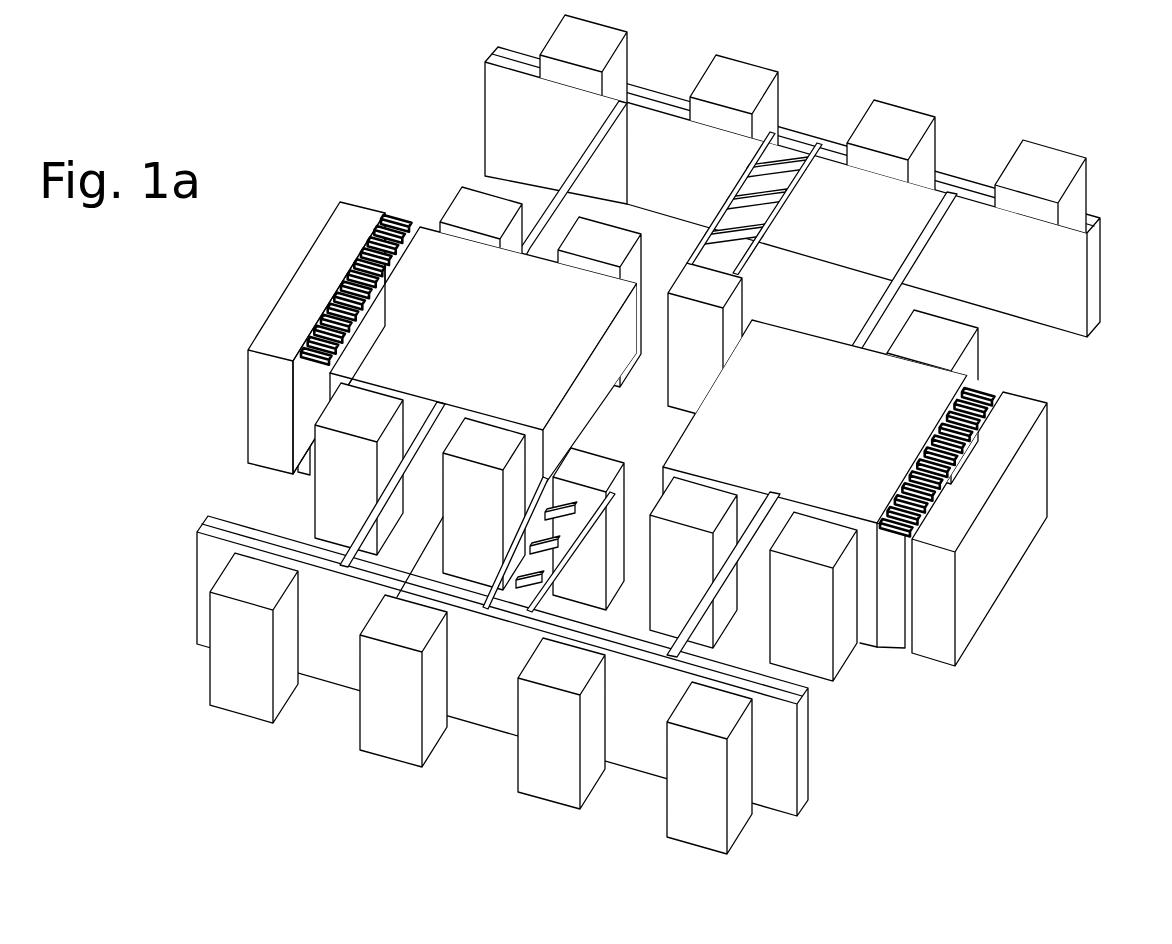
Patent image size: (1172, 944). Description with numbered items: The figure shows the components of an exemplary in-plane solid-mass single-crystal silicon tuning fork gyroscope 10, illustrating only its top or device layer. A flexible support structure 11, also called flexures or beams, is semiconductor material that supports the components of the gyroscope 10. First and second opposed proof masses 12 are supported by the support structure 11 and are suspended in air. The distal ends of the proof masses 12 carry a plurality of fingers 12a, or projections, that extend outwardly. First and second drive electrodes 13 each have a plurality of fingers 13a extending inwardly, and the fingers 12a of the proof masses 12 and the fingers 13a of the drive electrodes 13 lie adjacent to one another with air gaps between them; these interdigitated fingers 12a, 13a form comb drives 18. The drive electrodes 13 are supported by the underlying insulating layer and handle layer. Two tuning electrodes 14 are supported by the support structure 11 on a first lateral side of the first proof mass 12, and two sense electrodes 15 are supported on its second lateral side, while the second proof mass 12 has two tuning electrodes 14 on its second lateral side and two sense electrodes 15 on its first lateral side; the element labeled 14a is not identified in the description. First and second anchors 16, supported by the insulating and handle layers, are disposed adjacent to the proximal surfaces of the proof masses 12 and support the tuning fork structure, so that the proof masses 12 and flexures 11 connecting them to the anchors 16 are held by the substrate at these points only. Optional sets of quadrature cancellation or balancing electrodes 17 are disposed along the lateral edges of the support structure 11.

The tuning fork gyroscope 10 is at (185, 64).
The flexible support structure 11 is at (573, 170).
The proof masses 12 is at (432, 252).
The fingers 12a is at (356, 306).
The drive electrodes 13 is at (280, 325).
The fingers 13a is at (326, 302).
The tuning electrodes 14 is at (460, 490).
The support block 14a is at (492, 415).
The sense electrodes 15 is at (638, 238).
The anchors 16 is at (650, 423).
The quadrature cancellation electrodes 17 is at (1007, 158).
The comb drives 18 is at (337, 263).